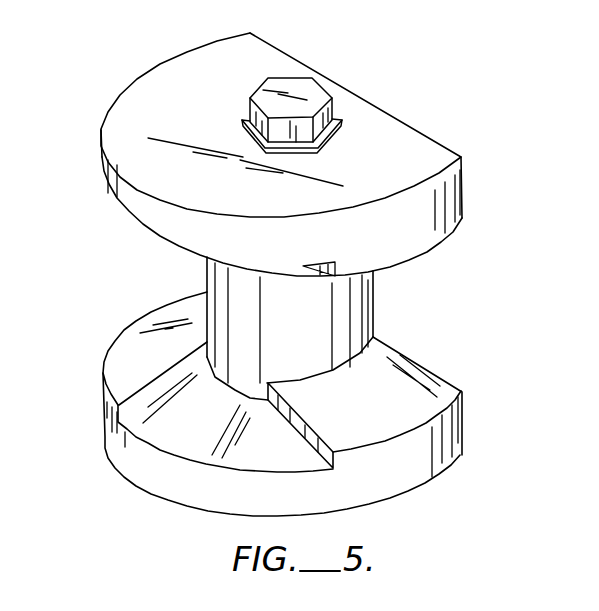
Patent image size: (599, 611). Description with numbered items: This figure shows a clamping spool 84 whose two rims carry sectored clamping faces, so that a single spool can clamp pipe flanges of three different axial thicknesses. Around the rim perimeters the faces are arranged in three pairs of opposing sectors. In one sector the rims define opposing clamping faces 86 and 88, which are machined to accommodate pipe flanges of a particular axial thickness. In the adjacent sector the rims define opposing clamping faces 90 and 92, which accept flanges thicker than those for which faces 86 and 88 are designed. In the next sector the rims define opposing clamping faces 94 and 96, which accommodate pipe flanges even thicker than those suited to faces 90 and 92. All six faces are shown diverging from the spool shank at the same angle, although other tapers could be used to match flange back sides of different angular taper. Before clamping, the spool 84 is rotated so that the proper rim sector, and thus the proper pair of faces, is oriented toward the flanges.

The clamping spool 84 is at (314, 40).
The clamping face 86 is at (407, 407).
The clamping face 88 is at (420, 252).
The clamping face 90 is at (188, 440).
The clamping face 92 is at (168, 244).
The clamping face 94 is at (141, 352).
The clamping face 96 is at (110, 182).